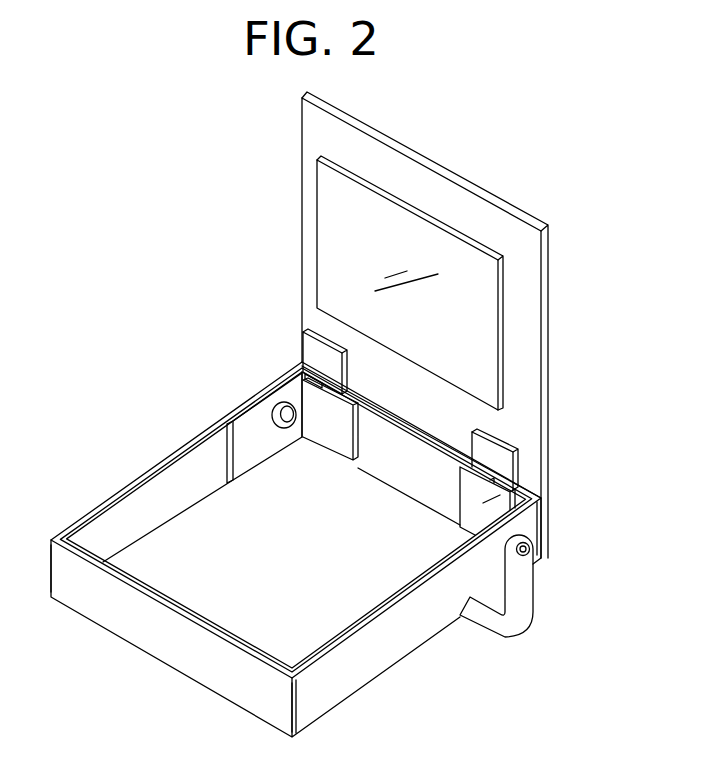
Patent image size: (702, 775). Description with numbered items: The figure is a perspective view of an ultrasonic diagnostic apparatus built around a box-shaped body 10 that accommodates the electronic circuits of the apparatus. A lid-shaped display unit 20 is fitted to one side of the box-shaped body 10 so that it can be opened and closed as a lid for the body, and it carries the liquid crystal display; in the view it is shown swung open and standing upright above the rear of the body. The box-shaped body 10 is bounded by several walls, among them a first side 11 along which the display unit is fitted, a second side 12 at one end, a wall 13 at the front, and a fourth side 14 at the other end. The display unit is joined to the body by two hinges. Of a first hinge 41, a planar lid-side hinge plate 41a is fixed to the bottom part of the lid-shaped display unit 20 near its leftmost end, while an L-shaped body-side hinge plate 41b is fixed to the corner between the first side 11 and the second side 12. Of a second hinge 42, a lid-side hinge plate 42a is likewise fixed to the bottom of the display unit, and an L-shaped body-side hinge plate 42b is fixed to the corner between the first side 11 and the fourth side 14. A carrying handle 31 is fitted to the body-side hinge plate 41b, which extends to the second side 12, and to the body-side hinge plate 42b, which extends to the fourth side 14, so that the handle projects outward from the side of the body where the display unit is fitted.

The box-shaped body 10 is at (281, 550).
The first side 11 is at (393, 457).
The second side 12 is at (143, 500).
The front wall 13 is at (242, 678).
The fourth side 14 is at (357, 663).
The lid-shaped display unit 20 is at (281, 192).
The carrying handle 31 is at (540, 595).
The first hinge 41 is at (243, 398).
The lid-side hinge plate 41a is at (315, 357).
The body-side hinge plate 41b is at (250, 430).
The second hinge 42 is at (568, 482).
The lid-side hinge plate 42a is at (495, 457).
The body-side hinge plate 42b is at (510, 487).